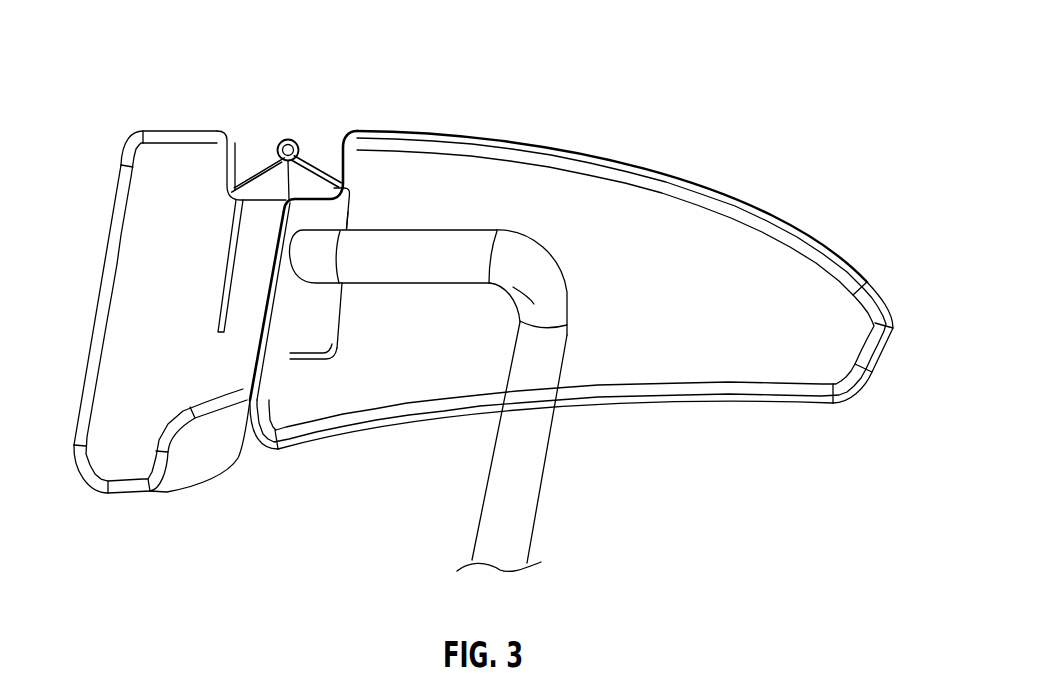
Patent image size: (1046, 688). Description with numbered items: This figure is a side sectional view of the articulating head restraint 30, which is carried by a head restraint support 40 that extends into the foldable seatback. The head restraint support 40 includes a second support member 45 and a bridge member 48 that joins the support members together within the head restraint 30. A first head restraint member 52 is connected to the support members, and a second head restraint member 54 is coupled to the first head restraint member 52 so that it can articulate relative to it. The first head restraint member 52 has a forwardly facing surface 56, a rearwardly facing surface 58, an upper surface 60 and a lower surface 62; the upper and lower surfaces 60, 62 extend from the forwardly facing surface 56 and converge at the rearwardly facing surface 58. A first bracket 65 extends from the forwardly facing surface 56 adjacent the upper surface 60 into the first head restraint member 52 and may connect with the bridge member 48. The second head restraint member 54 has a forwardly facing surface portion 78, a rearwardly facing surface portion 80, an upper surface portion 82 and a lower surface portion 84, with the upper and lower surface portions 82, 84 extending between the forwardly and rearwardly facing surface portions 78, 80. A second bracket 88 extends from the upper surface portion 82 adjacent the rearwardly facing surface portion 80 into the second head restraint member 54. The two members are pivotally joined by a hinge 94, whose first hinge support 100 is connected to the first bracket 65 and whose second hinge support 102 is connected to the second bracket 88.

The head restraint 30 is at (156, 36).
The head restraint support 40 is at (447, 500).
The second support member 45 is at (541, 483).
The bridge member 48 is at (293, 325).
The first head restraint member 52 is at (627, 213).
The second head restraint member 54 is at (173, 285).
The forwardly facing surface 56 is at (253, 347).
The rearwardly facing surface 58 is at (887, 357).
The upper surface 60 is at (717, 190).
The lower surface 62 is at (733, 404).
The first bracket 65 is at (350, 227).
The forwardly facing surface portion 78 is at (100, 258).
The rearwardly facing surface portion 80 is at (350, 187).
The upper surface portion 82 is at (193, 131).
The lower surface portion 84 is at (127, 496).
The second bracket 88 is at (230, 247).
The hinge 94 is at (288, 139).
The first hinge support 100 is at (324, 162).
The second hinge support 102 is at (262, 167).